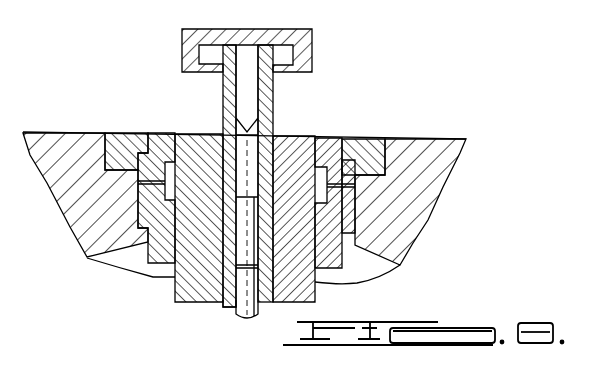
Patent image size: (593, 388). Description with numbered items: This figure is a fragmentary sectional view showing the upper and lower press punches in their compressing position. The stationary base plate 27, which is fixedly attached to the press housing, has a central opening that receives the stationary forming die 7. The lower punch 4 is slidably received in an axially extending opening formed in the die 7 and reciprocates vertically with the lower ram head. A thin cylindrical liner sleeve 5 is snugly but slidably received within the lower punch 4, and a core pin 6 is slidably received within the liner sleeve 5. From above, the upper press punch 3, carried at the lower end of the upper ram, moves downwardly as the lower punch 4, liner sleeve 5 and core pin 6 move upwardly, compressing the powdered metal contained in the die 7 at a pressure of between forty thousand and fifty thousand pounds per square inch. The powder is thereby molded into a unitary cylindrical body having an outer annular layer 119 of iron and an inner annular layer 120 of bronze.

The upper press punch 3 is at (270, 100).
The lower punch 4 is at (217, 253).
The liner sleeve 5 is at (230, 308).
The core pin 6 is at (250, 310).
The forming die 7 is at (282, 145).
The base plate 27 is at (446, 180).
The outer annular layer 119 is at (278, 172).
The inner annular layer 120 is at (233, 172).